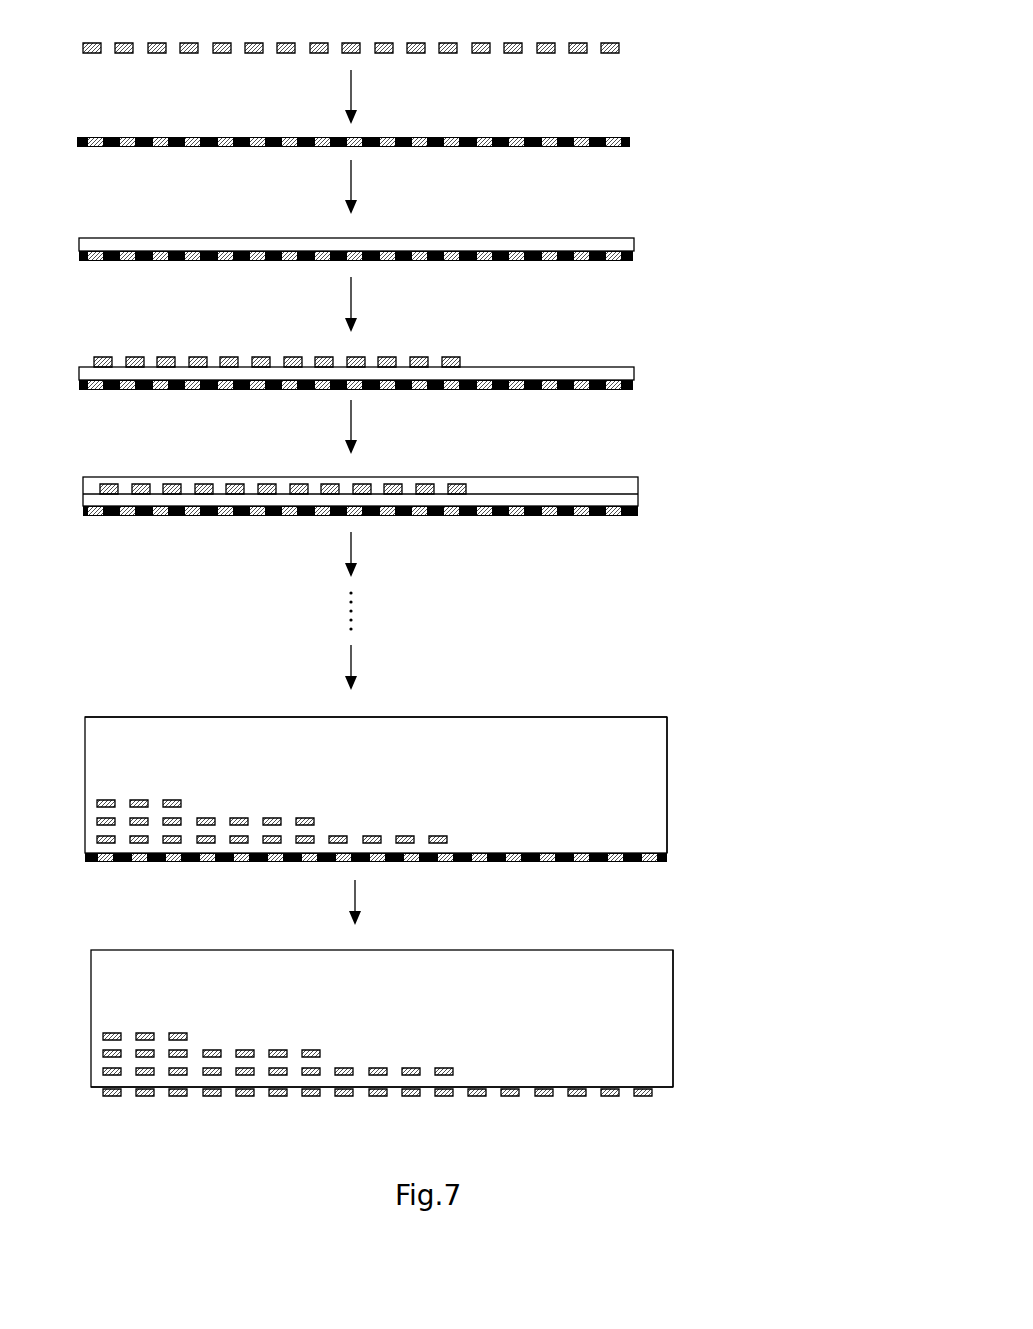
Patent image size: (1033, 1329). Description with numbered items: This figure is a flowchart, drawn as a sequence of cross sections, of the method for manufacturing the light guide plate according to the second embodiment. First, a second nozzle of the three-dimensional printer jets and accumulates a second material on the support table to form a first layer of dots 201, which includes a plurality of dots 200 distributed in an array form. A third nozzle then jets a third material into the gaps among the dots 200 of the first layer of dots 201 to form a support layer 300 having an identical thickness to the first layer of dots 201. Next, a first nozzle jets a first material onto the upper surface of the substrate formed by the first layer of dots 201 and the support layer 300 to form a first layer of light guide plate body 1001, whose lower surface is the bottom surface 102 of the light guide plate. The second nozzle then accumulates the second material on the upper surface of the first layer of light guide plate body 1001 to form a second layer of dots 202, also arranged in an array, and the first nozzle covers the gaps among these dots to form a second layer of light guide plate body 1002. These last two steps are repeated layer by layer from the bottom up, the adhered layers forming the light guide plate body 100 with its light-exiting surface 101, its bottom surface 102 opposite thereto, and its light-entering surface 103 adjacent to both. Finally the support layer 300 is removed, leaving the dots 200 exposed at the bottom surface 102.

The light guide plate body 100 is at (566, 748).
The light-exiting surface 101 is at (463, 717).
The bottom surface 102 is at (360, 1087).
The light-entering surface 103 is at (667, 770).
The dots 200 is at (170, 800).
The first layer of dots 201 is at (541, 53).
The second layer of dots 202 is at (447, 357).
The support layer 300 is at (592, 137).
The first layer of light guide plate body 1001 is at (525, 244).
The second layer of light guide plate body 1002 is at (628, 485).